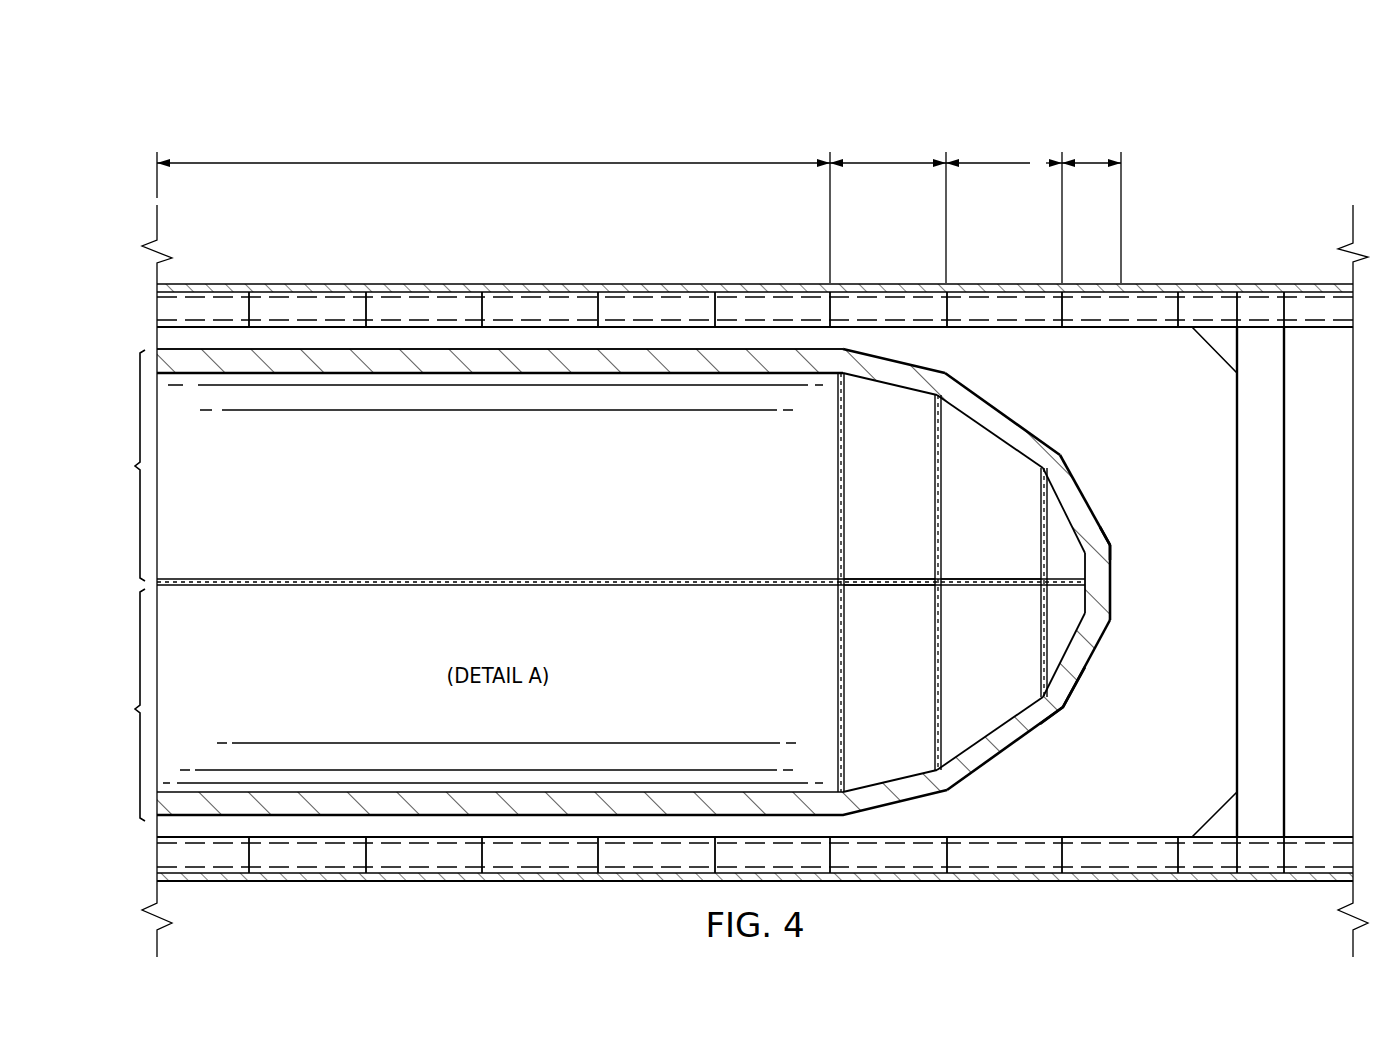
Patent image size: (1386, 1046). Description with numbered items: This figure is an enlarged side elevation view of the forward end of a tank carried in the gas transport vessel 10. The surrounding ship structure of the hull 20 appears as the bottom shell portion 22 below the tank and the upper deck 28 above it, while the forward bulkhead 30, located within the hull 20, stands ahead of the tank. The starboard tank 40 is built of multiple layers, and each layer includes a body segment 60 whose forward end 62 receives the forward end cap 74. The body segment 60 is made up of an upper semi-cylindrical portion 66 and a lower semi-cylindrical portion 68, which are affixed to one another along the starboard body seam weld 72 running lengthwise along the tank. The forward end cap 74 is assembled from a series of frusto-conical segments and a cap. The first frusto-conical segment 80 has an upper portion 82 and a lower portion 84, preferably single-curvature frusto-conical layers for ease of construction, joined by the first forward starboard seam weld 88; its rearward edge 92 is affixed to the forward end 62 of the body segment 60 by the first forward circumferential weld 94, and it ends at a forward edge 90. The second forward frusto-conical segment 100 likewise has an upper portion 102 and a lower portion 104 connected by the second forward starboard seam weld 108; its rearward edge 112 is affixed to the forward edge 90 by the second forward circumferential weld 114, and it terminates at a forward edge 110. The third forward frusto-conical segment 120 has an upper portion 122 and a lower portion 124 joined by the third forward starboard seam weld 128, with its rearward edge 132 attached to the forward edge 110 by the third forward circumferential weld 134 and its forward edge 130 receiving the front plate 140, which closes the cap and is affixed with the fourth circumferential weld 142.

The gas transport vessel 10 is at (350, 102).
The hull 20 is at (1157, 280).
The bottom shell portion 22 is at (998, 882).
The upper deck 28 is at (437, 284).
The forward bulkhead 30 is at (1287, 582).
The starboard tank 40 is at (547, 343).
The body segment 60 is at (497, 163).
The forward end 62 is at (653, 349).
The upper semi-cylindrical portion 66 is at (459, 465).
The lower semi-cylindrical portion 68 is at (459, 705).
The starboard body seam weld 72 is at (420, 578).
The forward end cap 74 is at (1086, 381).
The first frusto-conical segment 80 is at (890, 163).
The upper portion 82 is at (893, 398).
The lower portion 84 is at (893, 772).
The first forward starboard seam weld 88 is at (890, 578).
The forward edge 90 is at (1008, 750).
The rearward edge 92 is at (872, 814).
The first forward circumferential weld 94 is at (836, 480).
The second forward frusto-conical segment 100 is at (995, 163).
The upper portion 102 is at (1000, 463).
The lower portion 104 is at (1042, 725).
The second forward starboard seam weld 108 is at (997, 578).
The forward edge 110 is at (1063, 450).
The rearward edge 112 is at (936, 481).
The second forward circumferential weld 114 is at (936, 678).
The third forward frusto-conical segment 120 is at (1095, 163).
The upper portion 122 is at (1063, 535).
The lower portion 124 is at (1087, 665).
The third forward starboard seam weld 128 is at (1107, 543).
The forward edge 130 is at (1112, 570).
The rearward edge 132 is at (1080, 688).
The third forward circumferential weld 134 is at (1041, 642).
The front plate 140 is at (1097, 627).
The fourth circumferential weld 142 is at (1112, 595).